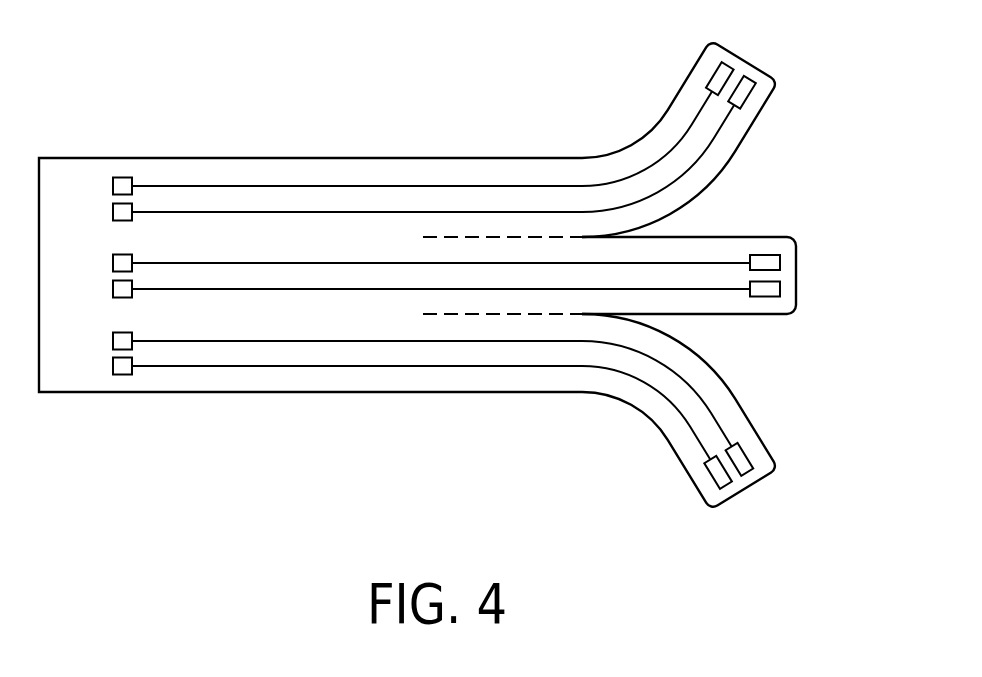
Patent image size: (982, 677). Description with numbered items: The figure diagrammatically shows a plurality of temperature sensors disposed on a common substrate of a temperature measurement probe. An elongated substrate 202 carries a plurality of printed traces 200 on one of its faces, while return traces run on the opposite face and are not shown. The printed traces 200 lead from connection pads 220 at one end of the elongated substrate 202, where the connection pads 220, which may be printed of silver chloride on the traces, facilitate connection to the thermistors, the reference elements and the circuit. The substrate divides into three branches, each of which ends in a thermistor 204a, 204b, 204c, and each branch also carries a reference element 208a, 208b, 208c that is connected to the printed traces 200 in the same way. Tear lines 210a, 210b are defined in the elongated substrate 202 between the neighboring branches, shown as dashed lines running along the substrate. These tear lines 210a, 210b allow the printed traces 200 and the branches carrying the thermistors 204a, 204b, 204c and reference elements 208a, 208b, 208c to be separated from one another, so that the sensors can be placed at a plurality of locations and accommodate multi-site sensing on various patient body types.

The printed traces 200 is at (350, 186).
The elongated substrate 202 is at (235, 158).
The thermistor 204a is at (712, 70).
The thermistor 204b is at (764, 255).
The thermistor 204c is at (748, 455).
The reference element 208a is at (747, 97).
The reference element 208b is at (767, 297).
The reference element 208c is at (708, 482).
The tear line 210a is at (490, 237).
The tear line 210b is at (492, 315).
The connection pads 220 is at (113, 208).